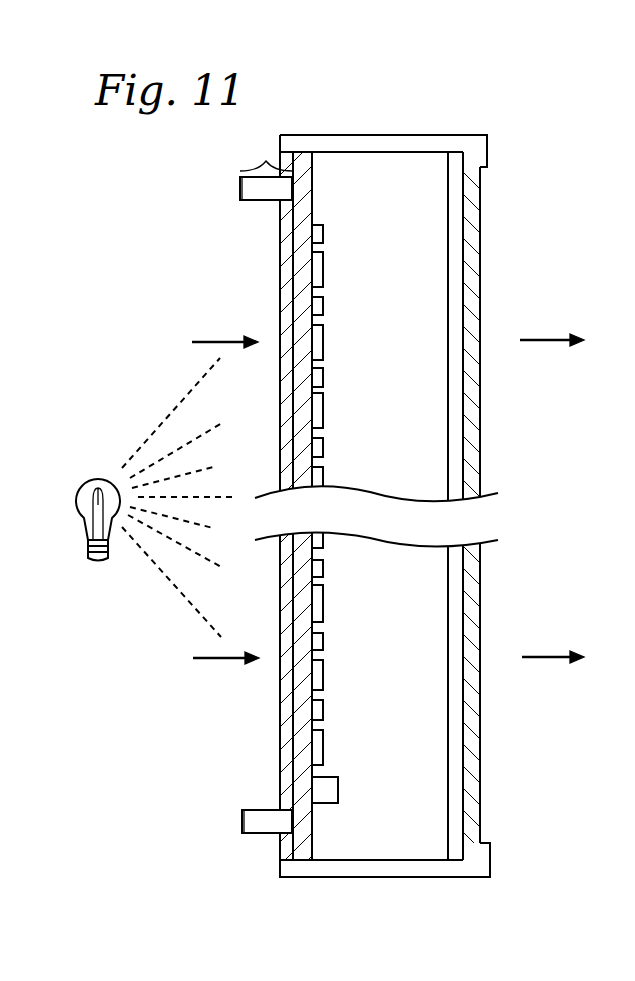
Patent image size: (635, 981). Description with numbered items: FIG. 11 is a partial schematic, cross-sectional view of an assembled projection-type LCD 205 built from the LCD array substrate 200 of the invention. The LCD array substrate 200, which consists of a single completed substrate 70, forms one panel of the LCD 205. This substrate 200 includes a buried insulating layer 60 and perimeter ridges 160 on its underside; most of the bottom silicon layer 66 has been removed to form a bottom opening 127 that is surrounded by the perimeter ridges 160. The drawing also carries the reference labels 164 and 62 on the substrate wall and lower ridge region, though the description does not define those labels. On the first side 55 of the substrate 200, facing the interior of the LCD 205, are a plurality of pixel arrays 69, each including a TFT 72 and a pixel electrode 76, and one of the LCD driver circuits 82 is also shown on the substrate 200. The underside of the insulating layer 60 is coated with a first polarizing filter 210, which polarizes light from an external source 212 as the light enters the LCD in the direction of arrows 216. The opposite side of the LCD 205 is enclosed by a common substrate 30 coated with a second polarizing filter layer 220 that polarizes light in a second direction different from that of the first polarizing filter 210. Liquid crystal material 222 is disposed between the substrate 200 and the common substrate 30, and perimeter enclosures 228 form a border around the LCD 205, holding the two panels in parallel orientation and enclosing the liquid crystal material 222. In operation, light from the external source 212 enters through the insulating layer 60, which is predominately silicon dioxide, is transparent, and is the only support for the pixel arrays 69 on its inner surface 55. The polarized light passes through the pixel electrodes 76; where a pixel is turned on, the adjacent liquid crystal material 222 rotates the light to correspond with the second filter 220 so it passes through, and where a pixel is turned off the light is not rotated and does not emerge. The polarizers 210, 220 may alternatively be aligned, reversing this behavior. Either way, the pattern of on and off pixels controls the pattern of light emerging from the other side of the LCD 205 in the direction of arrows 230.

The common substrate 30 is at (456, 570).
The perimeter enclosures 228 is at (405, 140).
The second polarizing filter layer 220 is at (472, 706).
The liquid crystal material 222 is at (392, 432).
The first polarizing filter 210 is at (281, 474).
The inner wall layer 164 is at (293, 422).
The buried insulating layer 60 is at (303, 186).
The perimeter ridges 160 is at (250, 190).
The bottom silicon layer 66 is at (266, 154).
The bottom opening 127 is at (258, 203).
The outlet 62 is at (242, 825).
The TFT 72 is at (325, 232).
The pixel electrode 76 is at (325, 272).
The first side 55 is at (325, 347).
The LCD driver circuit 82 is at (340, 790).
The pixel arrays 69 is at (362, 402).
The external source 212 is at (100, 484).
The LCD array substrate 200 is at (166, 629).
The arrows 216 is at (225, 341).
The arrows 230 is at (545, 340).
The projection-type LCD 205 is at (516, 257).
The completed substrate 70 is at (258, 695).